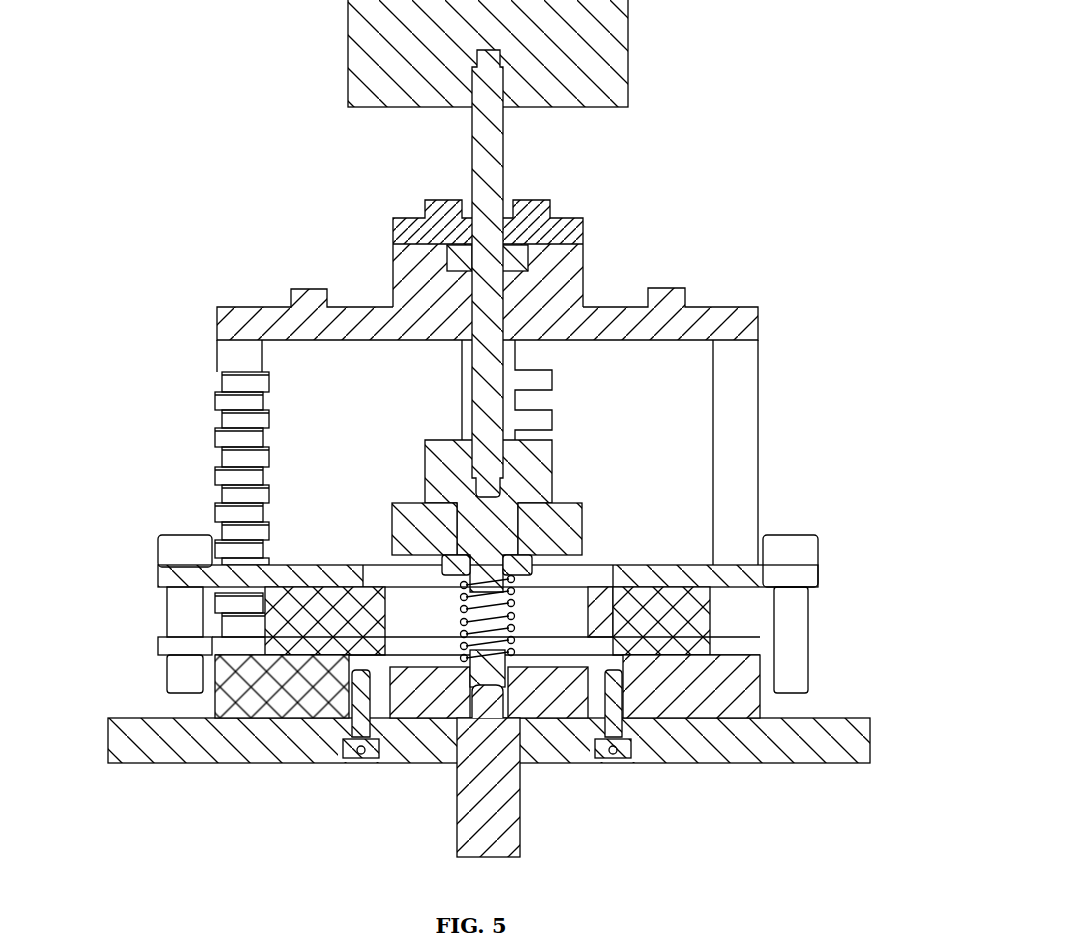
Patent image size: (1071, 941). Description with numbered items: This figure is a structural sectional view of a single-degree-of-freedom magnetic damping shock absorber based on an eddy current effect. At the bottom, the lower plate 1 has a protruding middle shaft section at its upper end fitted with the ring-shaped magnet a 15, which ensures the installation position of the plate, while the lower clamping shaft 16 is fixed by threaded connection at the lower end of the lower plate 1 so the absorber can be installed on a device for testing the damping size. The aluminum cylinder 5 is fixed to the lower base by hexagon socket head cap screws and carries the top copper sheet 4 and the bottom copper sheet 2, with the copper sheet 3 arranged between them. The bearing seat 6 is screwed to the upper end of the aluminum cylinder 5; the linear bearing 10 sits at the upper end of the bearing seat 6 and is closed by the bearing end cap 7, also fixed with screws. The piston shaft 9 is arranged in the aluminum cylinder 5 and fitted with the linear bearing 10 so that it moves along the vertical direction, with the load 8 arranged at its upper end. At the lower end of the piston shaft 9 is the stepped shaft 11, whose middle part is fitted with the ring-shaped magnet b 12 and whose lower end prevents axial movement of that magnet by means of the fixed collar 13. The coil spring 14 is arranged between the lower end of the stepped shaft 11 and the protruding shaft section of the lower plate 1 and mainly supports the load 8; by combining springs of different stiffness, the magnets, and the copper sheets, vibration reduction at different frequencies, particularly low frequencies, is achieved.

The lower plate 1 is at (705, 745).
The bottom copper sheet 2 is at (707, 655).
The copper sheet 3 is at (613, 627).
The top copper sheet 4 is at (682, 575).
The aluminum cylinder 5 is at (735, 465).
The bearing seat 6 is at (707, 323).
The bearing end cap 7 is at (552, 232).
The load 8 is at (588, 80).
The piston shaft 9 is at (485, 135).
The linear bearing 10 is at (450, 261).
The stepped shaft 11 is at (442, 453).
The ring-shaped magnet b 12 is at (393, 512).
The fixed collar 13 is at (392, 552).
The coil spring 14 is at (460, 623).
The ring-shaped magnet a 15 is at (468, 676).
The lower clamping shaft 16 is at (473, 781).